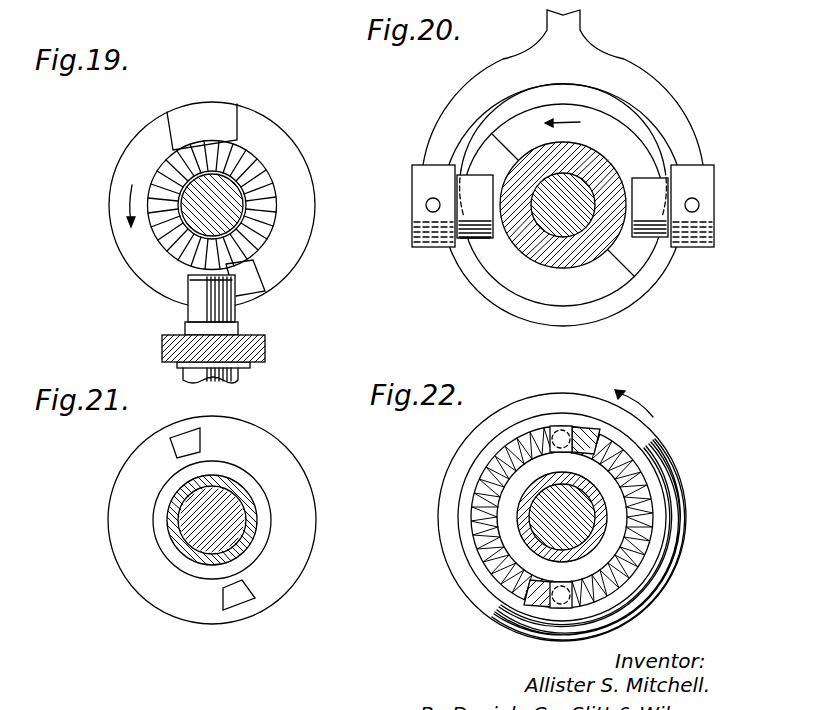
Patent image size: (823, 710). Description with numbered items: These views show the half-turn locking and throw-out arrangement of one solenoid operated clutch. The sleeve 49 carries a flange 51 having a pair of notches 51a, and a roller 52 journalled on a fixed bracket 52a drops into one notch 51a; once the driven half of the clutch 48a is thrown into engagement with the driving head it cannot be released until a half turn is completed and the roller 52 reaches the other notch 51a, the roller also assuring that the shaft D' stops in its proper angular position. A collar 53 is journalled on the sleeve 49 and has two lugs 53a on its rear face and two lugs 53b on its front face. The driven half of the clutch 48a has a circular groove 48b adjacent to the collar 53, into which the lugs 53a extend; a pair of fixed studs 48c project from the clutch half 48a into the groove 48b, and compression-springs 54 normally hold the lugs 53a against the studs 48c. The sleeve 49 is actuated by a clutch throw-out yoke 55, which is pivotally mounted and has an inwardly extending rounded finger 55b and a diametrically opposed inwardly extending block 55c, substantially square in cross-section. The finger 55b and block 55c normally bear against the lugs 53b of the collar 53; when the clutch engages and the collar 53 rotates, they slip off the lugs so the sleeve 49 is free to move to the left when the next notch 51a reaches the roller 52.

In FIG. 20, the sleeve 49 is at (568, 262).
In FIG. 21, the sleeve 49 is at (247, 492).
In FIG. 22, the sleeve 49 is at (597, 488).
In FIG. 19, the flange 51 is at (302, 232).
In FIG. 19, the notches 51a is at (219, 107).
In FIG. 19, the roller 52 is at (216, 312).
In FIG. 19, the fixed bracket 52a is at (265, 337).
In FIG. 20, the collar 53 is at (617, 283).
In FIG. 21, the collar 53 is at (310, 520).
In FIG. 21, the lugs 53a is at (188, 438).
In FIG. 22, the lugs 53a is at (582, 428).
In FIG. 20, the lugs 53b is at (483, 152).
In FIG. 22, the compression-springs 54 is at (647, 487).
In FIG. 20, the clutch throw-out yoke 55 is at (685, 135).
In FIG. 20, the rounded finger 55b is at (477, 247).
In FIG. 20, the block 55c is at (660, 200).
In FIG. 22, the driven half of the clutch 48a is at (677, 510).
In FIG. 22, the circular groove 48b is at (643, 557).
In FIG. 22, the fixed studs 48c is at (561, 426).
In FIG. 19, the shaft D' D is at (237, 190).
In FIG. 20, the shaft D' D is at (580, 177).
In FIG. 21, the shaft D' D is at (173, 500).
In FIG. 22, the shaft D' D is at (517, 507).